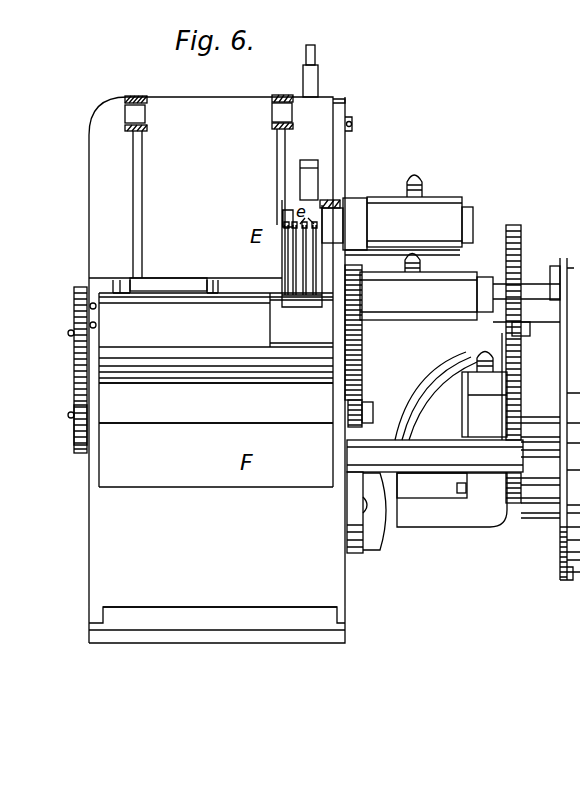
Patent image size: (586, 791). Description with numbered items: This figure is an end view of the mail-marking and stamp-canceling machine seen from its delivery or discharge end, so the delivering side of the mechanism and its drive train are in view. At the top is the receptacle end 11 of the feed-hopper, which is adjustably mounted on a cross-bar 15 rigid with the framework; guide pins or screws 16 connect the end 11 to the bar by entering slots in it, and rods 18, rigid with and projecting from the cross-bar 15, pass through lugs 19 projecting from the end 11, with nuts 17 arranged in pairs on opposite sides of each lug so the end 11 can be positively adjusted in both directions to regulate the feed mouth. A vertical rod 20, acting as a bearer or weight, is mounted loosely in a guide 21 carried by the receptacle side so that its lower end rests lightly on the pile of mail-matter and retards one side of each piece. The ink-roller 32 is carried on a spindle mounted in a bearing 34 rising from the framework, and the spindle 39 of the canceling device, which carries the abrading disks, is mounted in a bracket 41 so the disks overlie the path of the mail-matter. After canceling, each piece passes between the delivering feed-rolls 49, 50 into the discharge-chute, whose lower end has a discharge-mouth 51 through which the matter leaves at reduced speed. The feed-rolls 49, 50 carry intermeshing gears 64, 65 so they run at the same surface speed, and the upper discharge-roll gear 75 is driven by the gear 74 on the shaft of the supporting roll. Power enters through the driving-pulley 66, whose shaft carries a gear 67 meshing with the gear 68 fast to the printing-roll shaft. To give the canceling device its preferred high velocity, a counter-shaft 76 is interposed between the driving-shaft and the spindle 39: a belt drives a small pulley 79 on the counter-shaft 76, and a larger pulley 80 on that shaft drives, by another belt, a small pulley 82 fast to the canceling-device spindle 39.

The receptacle end 11 is at (217, 98).
The cross-bar 15 is at (172, 280).
The guide pins or screws 16 is at (120, 290).
The nuts 17 is at (137, 97).
The rods 18 is at (142, 182).
The lugs 19 is at (147, 113).
The vertical rod 20 is at (315, 52).
The guide 21 is at (318, 82).
The ink-roller 32 is at (307, 161).
The bearing 34 is at (420, 211).
The spindle 39 is at (526, 310).
The bracket 41 is at (426, 287).
The delivering feed-roll 49 is at (216, 320).
The delivering feed-roll 50 is at (130, 397).
The discharge-mouth 51 is at (220, 611).
The gear 64 is at (73, 315).
The gear 65 is at (73, 392).
The driving-pulley 66 is at (438, 483).
The gear 67 is at (513, 507).
The gear 68 is at (525, 332).
The gear 74 is at (373, 415).
The gear 75 is at (360, 340).
The counter-shaft 76 is at (435, 456).
The small pulley 79 is at (527, 453).
The larger pulley 80 is at (560, 395).
The small pulley 82 is at (560, 270).